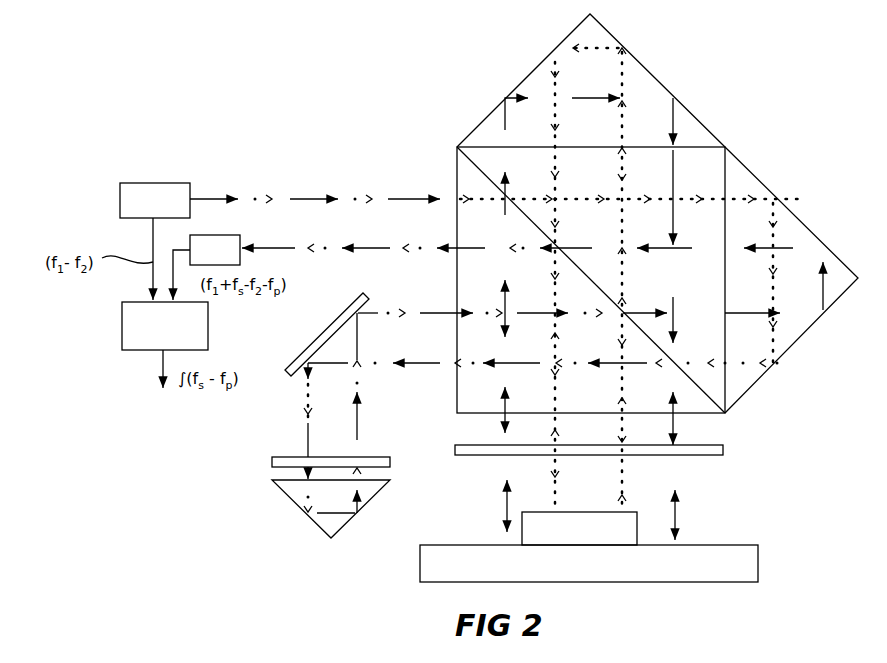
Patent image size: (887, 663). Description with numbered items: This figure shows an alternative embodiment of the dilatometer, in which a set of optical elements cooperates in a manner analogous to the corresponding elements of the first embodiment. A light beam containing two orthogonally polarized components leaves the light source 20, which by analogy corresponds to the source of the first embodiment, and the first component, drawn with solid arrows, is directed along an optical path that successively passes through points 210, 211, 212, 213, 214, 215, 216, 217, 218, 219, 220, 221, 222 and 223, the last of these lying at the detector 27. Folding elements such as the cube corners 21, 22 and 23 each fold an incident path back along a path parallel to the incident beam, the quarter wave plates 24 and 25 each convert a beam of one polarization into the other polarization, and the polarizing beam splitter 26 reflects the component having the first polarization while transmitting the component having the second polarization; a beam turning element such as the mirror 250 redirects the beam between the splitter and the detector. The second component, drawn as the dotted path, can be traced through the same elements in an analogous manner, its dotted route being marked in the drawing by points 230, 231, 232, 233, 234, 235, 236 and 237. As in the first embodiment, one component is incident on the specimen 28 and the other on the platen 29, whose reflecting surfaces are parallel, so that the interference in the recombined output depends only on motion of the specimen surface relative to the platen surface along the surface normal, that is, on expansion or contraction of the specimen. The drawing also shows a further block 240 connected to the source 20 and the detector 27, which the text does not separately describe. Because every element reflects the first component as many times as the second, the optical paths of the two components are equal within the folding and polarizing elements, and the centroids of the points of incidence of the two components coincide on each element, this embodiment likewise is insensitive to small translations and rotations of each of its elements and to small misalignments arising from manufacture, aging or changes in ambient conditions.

The two-frequency laser source 20 is at (170, 183).
The photodetector 27 is at (232, 237).
The signal processing electronics 240 is at (208, 326).
The point on optical path of first component 210 is at (315, 188).
The point on optical path of first component 223 is at (363, 239).
The beam turning element (mirror) 250 is at (372, 297).
The point on optical path of first component 220 is at (391, 306).
The point on optical path of first component 217 is at (353, 399).
The quarter wave plate 24 is at (380, 457).
The cube corner 23 is at (366, 490).
The point on optical path of first component 218 is at (314, 502).
The point on optical path of first component 219 is at (370, 425).
The cube corner 21 is at (537, 77).
The cube corner 22 is at (740, 175).
The polarizing beam splitter 26 is at (457, 158).
The point on optical path of first component 213 is at (545, 104).
The point on optical path of first component 214 is at (690, 211).
The beam path in upper prism 235 is at (575, 218).
The beam path in upper prism 234 is at (640, 218).
The point on optical path of first component 211 is at (489, 254).
The beam in splitter cube 237 is at (601, 239).
The beam in splitter cube 232 is at (633, 323).
The point on optical path of first component 216 is at (591, 373).
The beam into right prism 230 is at (637, 274).
The point on optical path of first component 222 is at (798, 234).
The point on optical path of first component 221 is at (840, 297).
The beam exiting right prism 231 is at (779, 357).
The quarter wave plate 25 is at (722, 445).
The point on optical path of first component 212 is at (483, 462).
The point on optical path of first component 215 is at (699, 466).
The beam path to stage mirror 236 is at (537, 464).
The beam path from stage mirror 233 is at (600, 464).
The movable stage mirror 28 is at (566, 537).
The base reference mirror 29 is at (584, 569).